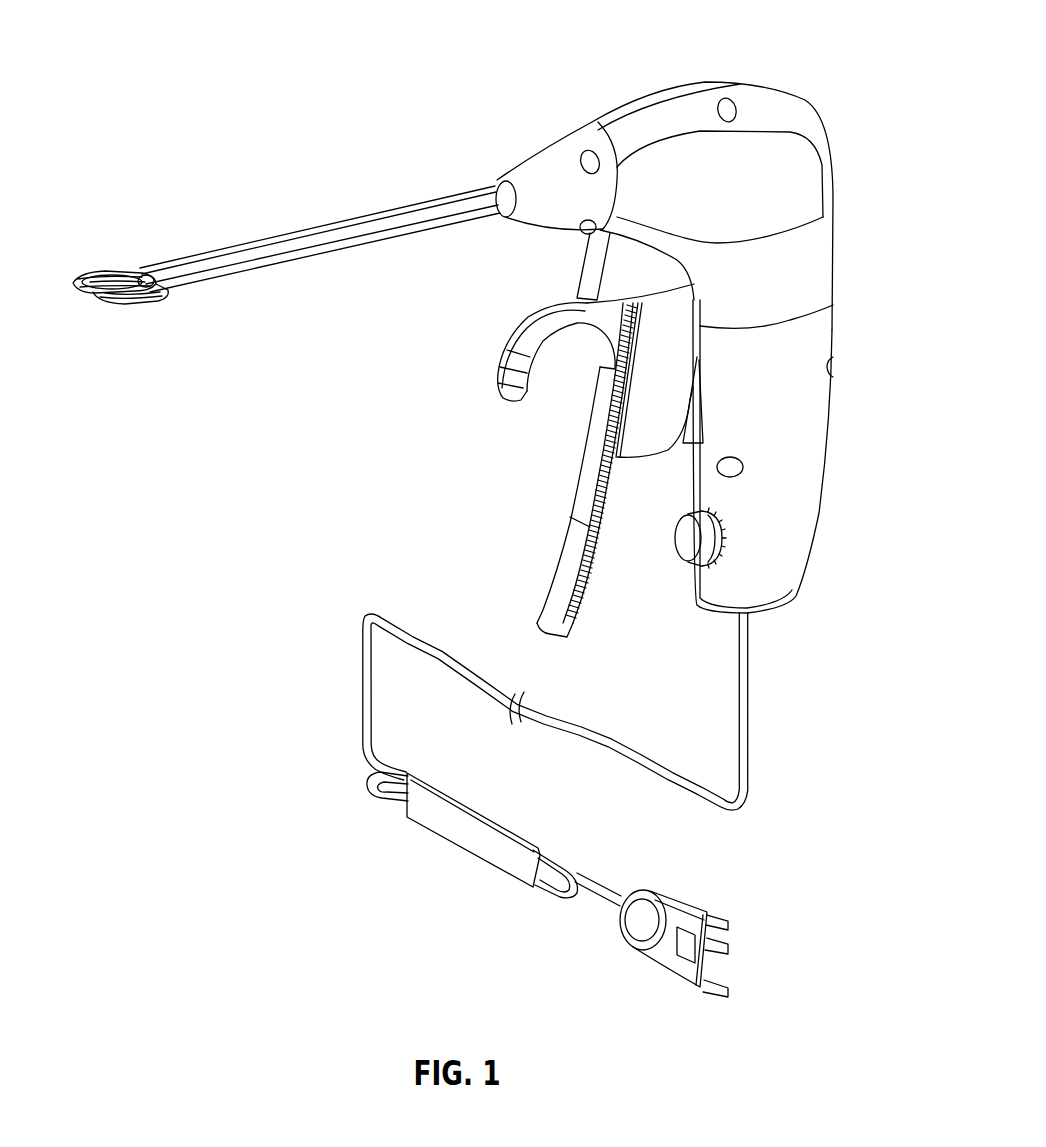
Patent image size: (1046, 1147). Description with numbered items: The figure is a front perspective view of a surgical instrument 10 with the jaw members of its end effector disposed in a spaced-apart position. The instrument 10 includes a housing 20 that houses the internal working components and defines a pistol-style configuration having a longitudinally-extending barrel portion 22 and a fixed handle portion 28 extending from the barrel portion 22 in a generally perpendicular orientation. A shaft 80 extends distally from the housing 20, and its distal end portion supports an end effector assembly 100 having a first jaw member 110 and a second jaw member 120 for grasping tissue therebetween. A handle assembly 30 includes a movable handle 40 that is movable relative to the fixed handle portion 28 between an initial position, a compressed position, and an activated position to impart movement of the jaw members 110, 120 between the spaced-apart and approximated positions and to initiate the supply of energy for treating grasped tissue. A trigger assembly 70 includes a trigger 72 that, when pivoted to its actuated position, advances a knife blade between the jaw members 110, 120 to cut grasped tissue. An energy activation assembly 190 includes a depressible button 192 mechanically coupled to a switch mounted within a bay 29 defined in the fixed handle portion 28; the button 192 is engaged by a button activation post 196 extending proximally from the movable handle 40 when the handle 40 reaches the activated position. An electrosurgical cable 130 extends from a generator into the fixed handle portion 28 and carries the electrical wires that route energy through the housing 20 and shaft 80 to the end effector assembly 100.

The instrument 10 is at (348, 156).
The housing 20 is at (772, 63).
The barrel portion 22 is at (773, 170).
The fixed handle portion 28 is at (771, 439).
The bay 29 is at (724, 544).
The handle assembly 30 is at (523, 632).
The movable handle 40 is at (536, 550).
The trigger assembly 70 is at (557, 249).
The trigger 72 is at (585, 267).
The shaft 80 is at (284, 258).
The end effector assembly 100 is at (157, 262).
The jaw member 110 is at (60, 298).
The jaw member 120 is at (118, 320).
The electrosurgical cable 130 is at (763, 790).
The energy activation assembly 190 is at (685, 578).
The depressible button 192 is at (688, 540).
The button activation post 196 is at (596, 581).